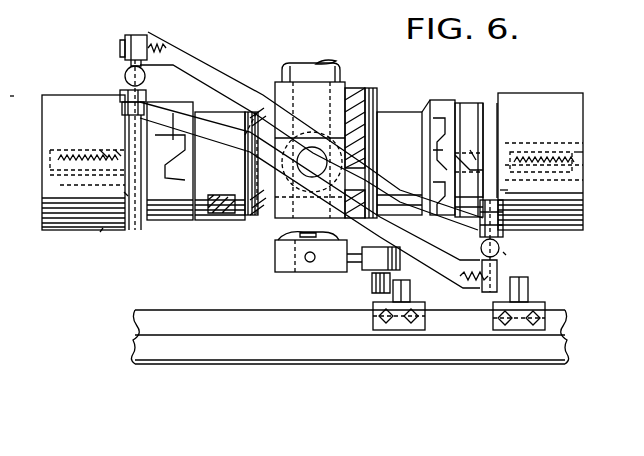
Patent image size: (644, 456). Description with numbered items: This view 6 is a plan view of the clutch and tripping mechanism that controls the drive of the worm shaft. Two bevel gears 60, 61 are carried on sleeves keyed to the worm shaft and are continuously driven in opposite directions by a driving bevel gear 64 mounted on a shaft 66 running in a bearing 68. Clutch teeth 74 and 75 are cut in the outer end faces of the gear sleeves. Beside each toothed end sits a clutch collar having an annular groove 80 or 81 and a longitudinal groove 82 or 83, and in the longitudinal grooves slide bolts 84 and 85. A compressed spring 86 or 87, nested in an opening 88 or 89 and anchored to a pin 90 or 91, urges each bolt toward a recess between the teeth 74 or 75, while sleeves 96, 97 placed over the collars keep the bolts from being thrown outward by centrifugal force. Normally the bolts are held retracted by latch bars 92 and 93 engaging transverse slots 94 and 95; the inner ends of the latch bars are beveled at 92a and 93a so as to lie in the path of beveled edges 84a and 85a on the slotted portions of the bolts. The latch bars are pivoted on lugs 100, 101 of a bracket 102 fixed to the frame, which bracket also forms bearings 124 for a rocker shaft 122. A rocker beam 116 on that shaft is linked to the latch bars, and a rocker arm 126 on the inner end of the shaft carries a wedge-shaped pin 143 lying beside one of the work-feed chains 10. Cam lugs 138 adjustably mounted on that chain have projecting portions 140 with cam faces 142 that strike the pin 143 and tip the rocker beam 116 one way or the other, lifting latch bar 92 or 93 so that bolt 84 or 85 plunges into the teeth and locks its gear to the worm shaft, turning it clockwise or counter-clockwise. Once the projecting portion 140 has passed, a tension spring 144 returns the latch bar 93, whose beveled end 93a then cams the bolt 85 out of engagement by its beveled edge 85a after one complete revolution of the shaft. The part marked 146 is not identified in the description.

The figure reference (partial) 6 is at (7, 85).
The work-feed chains 10 is at (200, 310).
The bevel gear 60 is at (264, 230).
The bevel gear 61 is at (370, 112).
The driving bevel gear 64 is at (358, 94).
The shaft 66 is at (329, 62).
The bearing 68 is at (284, 73).
The receiver forming teeth 74 is at (166, 236).
The teeth 75 is at (444, 104).
The annular groove 80 is at (124, 194).
The annular groove 81 is at (480, 110).
The longitudinal groove 82 is at (60, 185).
The longitudinal groove 83 is at (583, 196).
The sliding bolt 84 is at (175, 161).
The beveled edge 84a is at (113, 145).
The sliding bolt 85 is at (472, 157).
The beveled edge 85a is at (566, 150).
The compressed spring 86 is at (100, 150).
The compressed spring 87 is at (582, 143).
The opening 88 is at (50, 153).
The opening 89 is at (583, 167).
The pin 90 is at (50, 173).
The pin 91 is at (583, 182).
The latch bar 92 is at (124, 64).
The beveled inner end 92a is at (100, 232).
The latch bar 93 is at (504, 249).
The beveled inner end 93a is at (490, 134).
The transverse slot 94 is at (120, 122).
The transverse slot 95 is at (500, 190).
The sleeve 96 is at (48, 236).
The sleeve 97 is at (522, 95).
The lug 100 is at (151, 36).
The lug 101 is at (468, 252).
The bracket 102 is at (238, 209).
The rocker beam 116 is at (223, 105).
The rocker shaft 122 is at (268, 243).
The bearings 124 is at (289, 88).
The rocker arm 126 is at (336, 272).
The cam lugs 138 is at (545, 307).
The projecting portions 140 is at (394, 282).
The cam faces 142 is at (425, 315).
The wedge shaped pin 143 is at (372, 292).
The tension spring 144 is at (506, 254).
The ball joint 146 is at (124, 80).